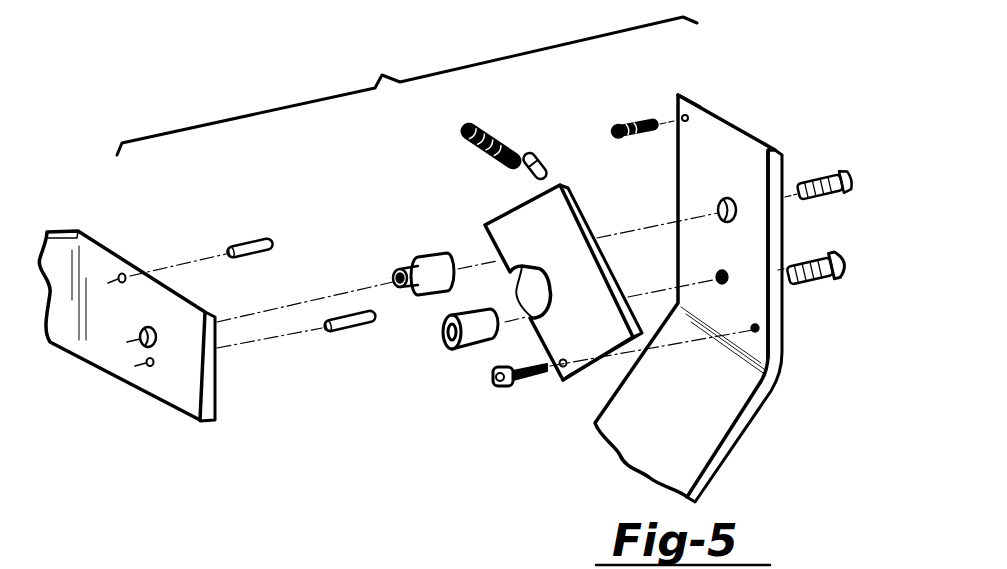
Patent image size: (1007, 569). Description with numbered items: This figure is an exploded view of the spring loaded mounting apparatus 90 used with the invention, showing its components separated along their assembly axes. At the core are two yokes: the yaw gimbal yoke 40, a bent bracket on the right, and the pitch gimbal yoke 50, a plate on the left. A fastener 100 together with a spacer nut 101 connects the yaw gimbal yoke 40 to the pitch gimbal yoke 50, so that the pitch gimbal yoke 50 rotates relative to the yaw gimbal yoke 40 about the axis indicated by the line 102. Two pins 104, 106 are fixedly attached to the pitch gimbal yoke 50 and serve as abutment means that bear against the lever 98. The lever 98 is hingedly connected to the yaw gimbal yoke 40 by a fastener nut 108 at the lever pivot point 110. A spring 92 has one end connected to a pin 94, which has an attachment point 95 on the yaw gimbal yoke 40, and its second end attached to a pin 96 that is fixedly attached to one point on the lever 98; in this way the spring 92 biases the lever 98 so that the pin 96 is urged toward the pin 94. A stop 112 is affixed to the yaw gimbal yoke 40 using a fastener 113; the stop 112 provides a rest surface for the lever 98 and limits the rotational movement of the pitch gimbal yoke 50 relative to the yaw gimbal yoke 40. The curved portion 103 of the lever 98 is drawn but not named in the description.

The yaw gimbal yoke 40 is at (724, 268).
The pitch gimbal yoke 50 is at (72, 230).
The mounting apparatus 90 is at (382, 58).
The spring 92 is at (508, 147).
The pin 94 is at (650, 120).
The attachment point 95 is at (688, 97).
The pin 96 is at (543, 162).
The lever 98 is at (548, 282).
The fastener 100 is at (850, 120).
The spacer nut 101 is at (429, 252).
The line 102 is at (333, 293).
The hook 103 is at (517, 287).
The pin 104 is at (263, 242).
The pin 106 is at (353, 333).
The fastener nut 108 is at (523, 386).
The lever pivot point 110 is at (757, 329).
The stop 112 is at (453, 353).
The fastener 113 is at (811, 283).